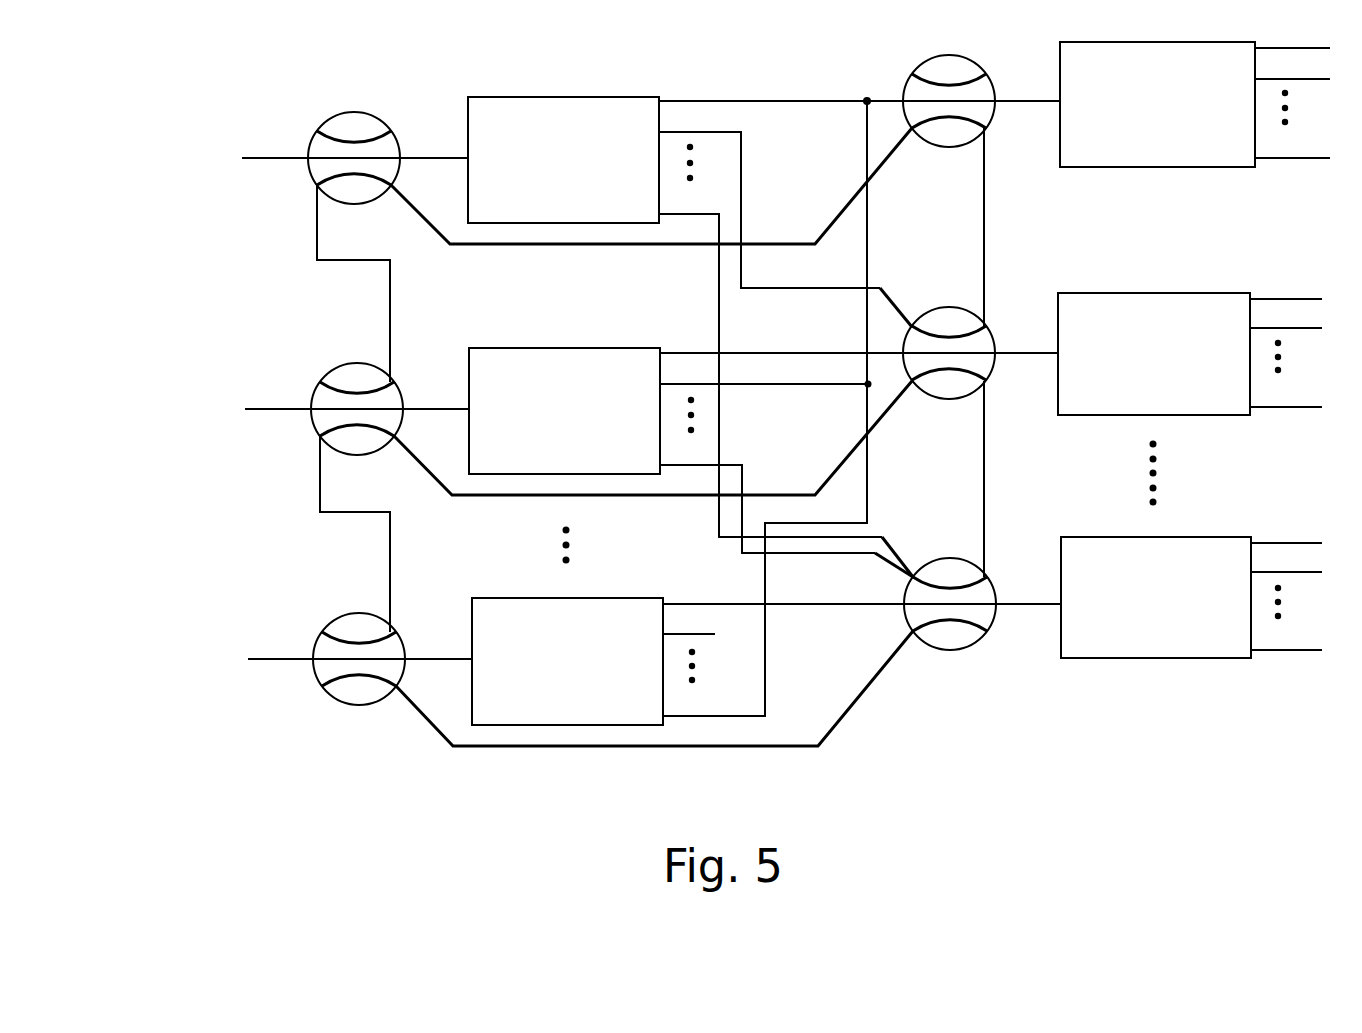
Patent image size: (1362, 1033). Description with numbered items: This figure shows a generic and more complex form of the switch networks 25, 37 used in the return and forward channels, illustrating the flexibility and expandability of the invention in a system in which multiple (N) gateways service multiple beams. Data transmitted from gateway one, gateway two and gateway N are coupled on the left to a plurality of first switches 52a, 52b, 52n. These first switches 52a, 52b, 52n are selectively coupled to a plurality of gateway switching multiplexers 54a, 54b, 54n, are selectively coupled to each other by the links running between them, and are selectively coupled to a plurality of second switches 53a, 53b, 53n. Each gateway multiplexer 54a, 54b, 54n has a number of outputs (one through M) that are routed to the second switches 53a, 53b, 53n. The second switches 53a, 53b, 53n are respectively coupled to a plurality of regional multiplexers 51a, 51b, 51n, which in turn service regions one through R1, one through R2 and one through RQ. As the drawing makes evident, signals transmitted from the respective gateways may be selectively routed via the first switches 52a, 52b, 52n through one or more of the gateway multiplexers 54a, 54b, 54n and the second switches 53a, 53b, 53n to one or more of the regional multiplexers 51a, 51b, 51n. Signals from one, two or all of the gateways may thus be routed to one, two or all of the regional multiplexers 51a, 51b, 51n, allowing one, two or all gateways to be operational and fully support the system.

The switch network 25 is at (710, 441).
The switch network 37 is at (710, 441).
The regional multiplexer 51a is at (1173, 167).
The regional multiplexer 51b is at (1143, 293).
The regional multiplexer 51n is at (1121, 537).
The first switch 52a is at (325, 127).
The first switch 52b is at (340, 374).
The first switch 52n is at (340, 625).
The second switch 53a is at (926, 67).
The second switch 53b is at (946, 309).
The second switch 53n is at (949, 560).
The gateway multiplexer 54a is at (517, 97).
The gateway multiplexer 54b is at (517, 348).
The gateway multiplexer 54n is at (516, 598).